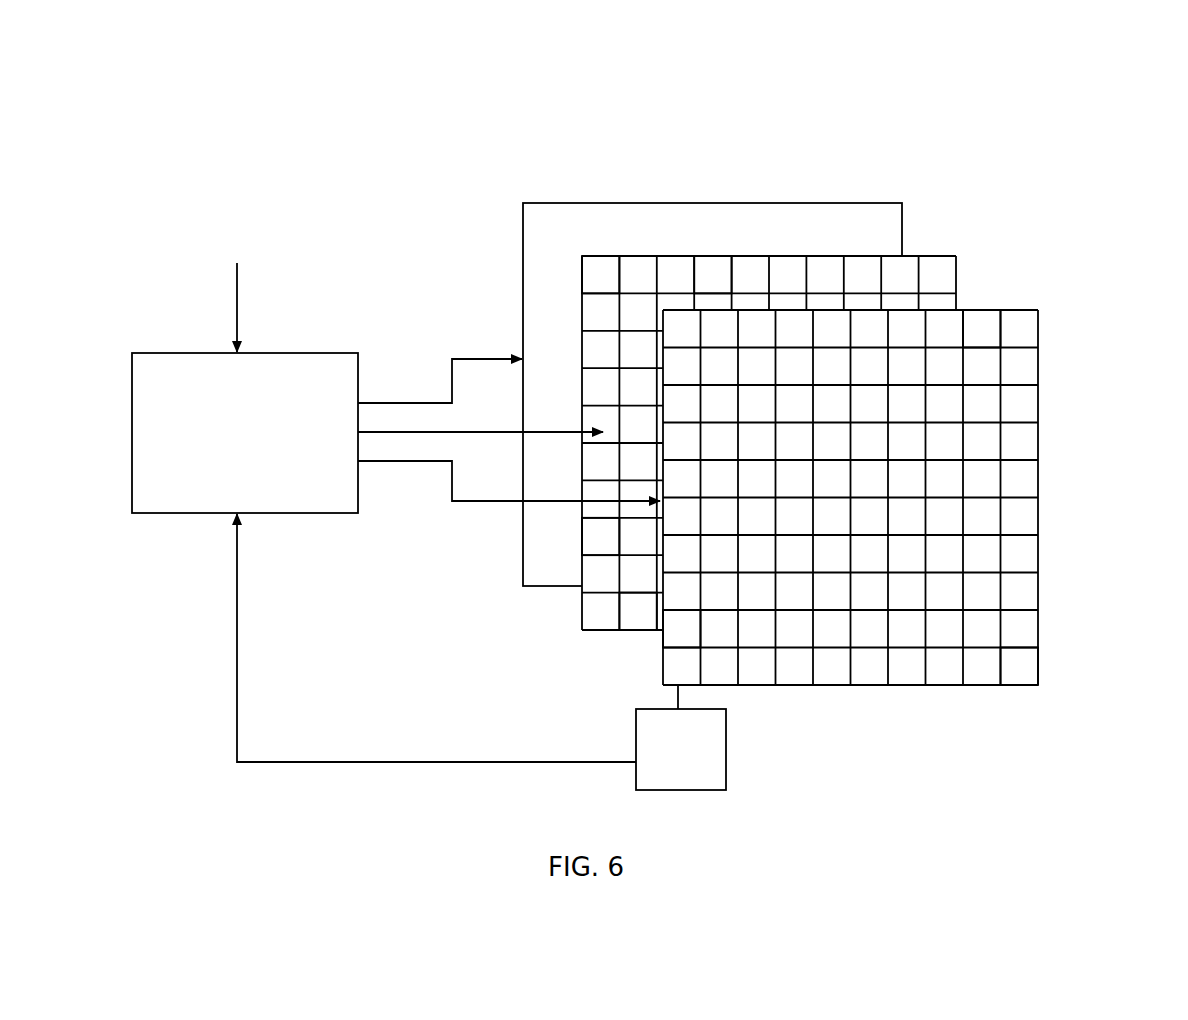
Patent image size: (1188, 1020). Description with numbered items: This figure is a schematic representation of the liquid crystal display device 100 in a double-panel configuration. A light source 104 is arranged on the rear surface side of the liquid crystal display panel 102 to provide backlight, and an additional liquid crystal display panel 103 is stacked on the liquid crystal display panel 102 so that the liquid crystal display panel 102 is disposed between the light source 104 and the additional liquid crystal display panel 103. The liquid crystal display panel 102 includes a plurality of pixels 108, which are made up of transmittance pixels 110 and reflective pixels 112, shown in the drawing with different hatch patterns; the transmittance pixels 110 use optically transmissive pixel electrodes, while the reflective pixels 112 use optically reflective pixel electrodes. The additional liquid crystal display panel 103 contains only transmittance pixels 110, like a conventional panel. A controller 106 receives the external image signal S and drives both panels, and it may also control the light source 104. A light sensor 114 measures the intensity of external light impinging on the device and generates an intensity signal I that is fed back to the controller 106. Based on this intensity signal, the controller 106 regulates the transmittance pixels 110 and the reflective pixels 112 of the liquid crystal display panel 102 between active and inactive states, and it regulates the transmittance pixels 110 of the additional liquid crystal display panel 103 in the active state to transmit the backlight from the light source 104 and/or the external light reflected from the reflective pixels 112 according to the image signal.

The liquid crystal display device 100 is at (1048, 130).
The liquid crystal display panel 102 is at (938, 252).
The additional liquid crystal display panel 103 is at (1040, 395).
The light source 104 is at (748, 202).
The controller 106 is at (245, 433).
The pixels 108 is at (602, 310).
The transmittance pixels 110 is at (722, 272).
The reflective pixels 112 is at (600, 273).
The light sensor 114 is at (681, 749).